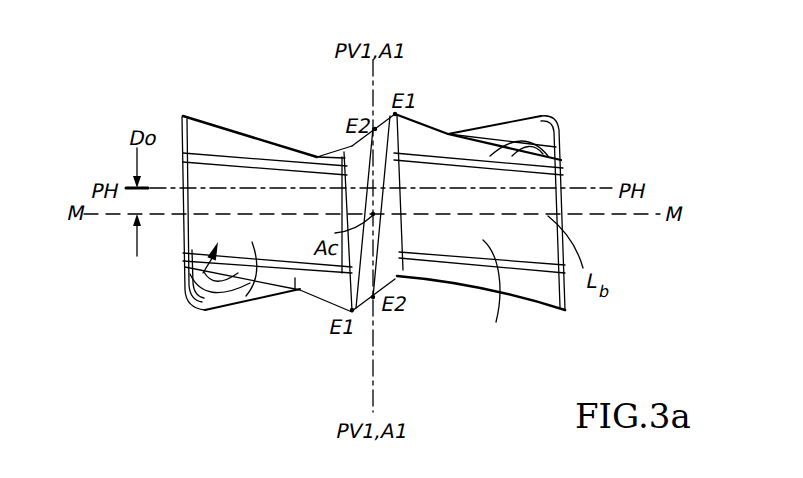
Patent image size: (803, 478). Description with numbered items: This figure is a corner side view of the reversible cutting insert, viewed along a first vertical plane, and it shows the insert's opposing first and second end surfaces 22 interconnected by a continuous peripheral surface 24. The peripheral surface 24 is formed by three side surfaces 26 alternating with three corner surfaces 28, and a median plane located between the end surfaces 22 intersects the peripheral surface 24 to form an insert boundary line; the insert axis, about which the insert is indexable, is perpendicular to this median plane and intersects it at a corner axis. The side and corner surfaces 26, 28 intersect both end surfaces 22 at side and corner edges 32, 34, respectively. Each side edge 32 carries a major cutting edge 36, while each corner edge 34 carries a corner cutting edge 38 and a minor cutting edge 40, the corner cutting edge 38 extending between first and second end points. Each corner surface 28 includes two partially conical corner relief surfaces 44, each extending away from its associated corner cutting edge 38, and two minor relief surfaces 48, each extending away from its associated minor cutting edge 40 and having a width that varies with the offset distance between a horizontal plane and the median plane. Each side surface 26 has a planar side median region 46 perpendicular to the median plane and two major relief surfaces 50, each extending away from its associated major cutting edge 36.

The first and second end surfaces 22 is at (206, 305).
The peripheral surface 24 is at (167, 248).
The side surfaces 26 is at (187, 285).
The corner surfaces 28 is at (333, 216).
The side edges 32 is at (214, 110).
The corner edges 34 is at (341, 142).
The major cutting edge 36 is at (428, 125).
The corner cutting edge 38 is at (398, 87).
The minor cutting edge 40 is at (363, 145).
The corner relief surfaces 44 is at (390, 114).
The side median region 46 is at (246, 296).
The minor relief surfaces 48 is at (310, 156).
The major relief surfaces 50 is at (445, 135).